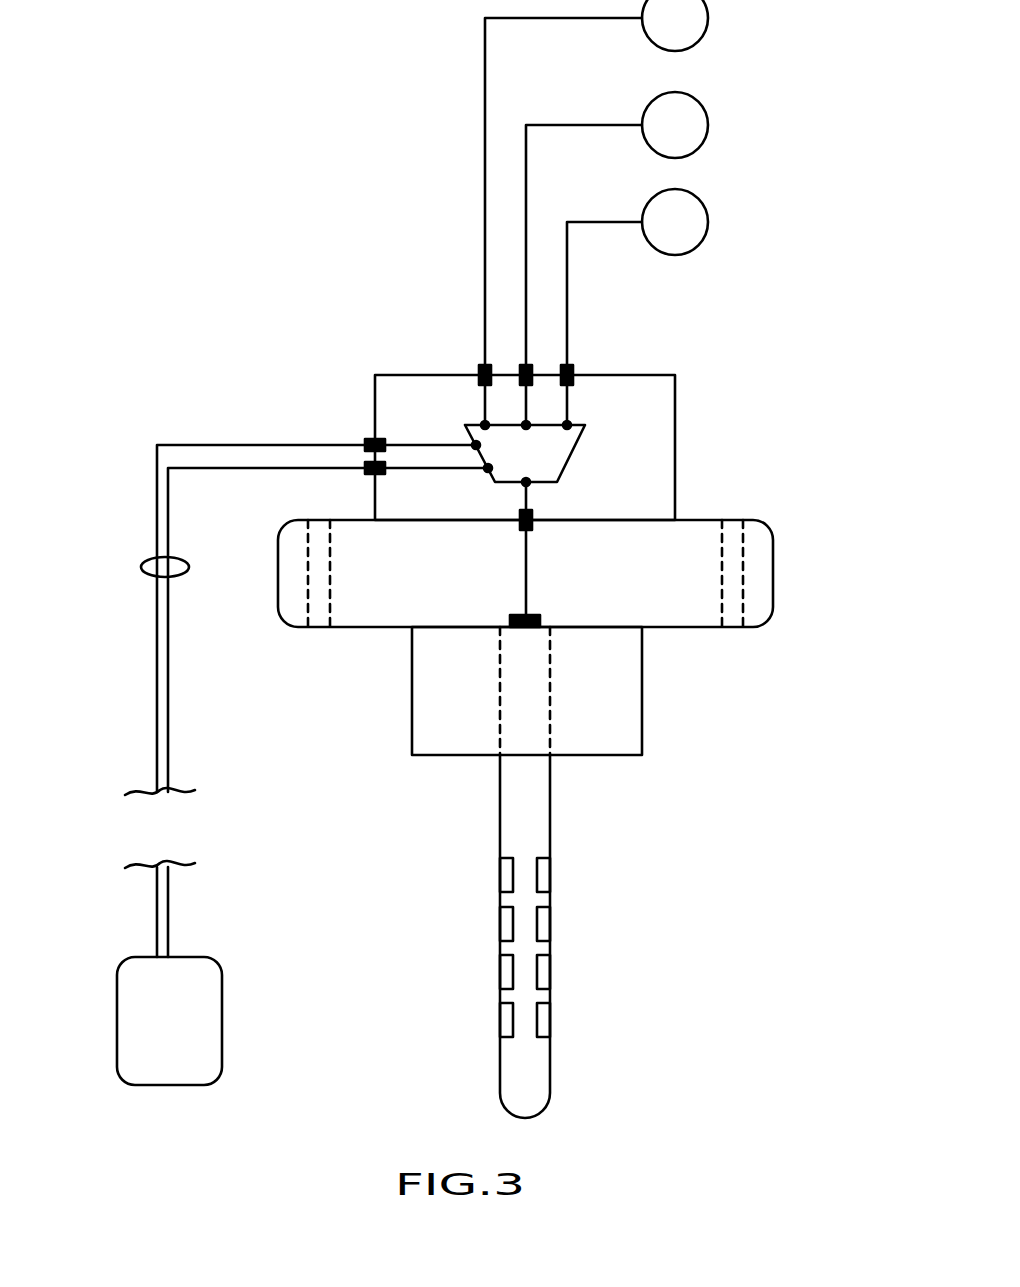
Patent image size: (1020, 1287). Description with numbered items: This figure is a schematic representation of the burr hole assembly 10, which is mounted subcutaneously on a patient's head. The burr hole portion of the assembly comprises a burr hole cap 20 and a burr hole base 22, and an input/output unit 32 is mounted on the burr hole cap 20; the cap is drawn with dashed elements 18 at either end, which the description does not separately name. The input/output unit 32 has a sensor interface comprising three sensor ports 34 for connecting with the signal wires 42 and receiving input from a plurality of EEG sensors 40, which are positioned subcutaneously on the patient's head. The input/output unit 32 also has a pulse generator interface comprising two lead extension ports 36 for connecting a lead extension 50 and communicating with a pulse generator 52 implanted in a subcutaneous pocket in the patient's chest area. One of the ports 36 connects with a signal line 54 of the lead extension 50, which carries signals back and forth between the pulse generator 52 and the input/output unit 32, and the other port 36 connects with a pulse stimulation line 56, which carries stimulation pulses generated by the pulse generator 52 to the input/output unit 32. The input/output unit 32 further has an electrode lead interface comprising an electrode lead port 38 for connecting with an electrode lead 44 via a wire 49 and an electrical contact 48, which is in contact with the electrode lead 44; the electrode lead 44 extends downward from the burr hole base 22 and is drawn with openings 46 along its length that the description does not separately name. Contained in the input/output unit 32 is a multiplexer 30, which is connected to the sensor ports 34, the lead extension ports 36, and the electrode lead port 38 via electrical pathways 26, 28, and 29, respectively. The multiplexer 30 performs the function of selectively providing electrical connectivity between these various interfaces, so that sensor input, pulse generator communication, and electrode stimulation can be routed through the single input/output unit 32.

The burr hole assembly 10 is at (308, 253).
The sealing members 18 is at (332, 570).
The burr hole cap 20 is at (708, 520).
The burr hole base 22 is at (642, 683).
The electrical pathways 26 is at (567, 400).
The electrical pathways 28 is at (410, 470).
The electrical pathway 29 is at (528, 494).
The multiplexer 30 is at (582, 448).
The input/output unit 32 is at (675, 395).
The sensor ports 34 is at (482, 368).
The lead extension ports 36 is at (372, 441).
The electrode lead port 38 is at (518, 525).
The EEG sensors 40 is at (708, 18).
The signal wires 42 is at (485, 95).
The electrode lead 44 is at (550, 803).
The probe openings 46 is at (550, 925).
The electrical contact 48 is at (540, 612).
The wire 49 is at (528, 565).
The lead extension 50 is at (142, 570).
The pulse generator 52 is at (222, 1004).
The signal line 54 is at (157, 675).
The pulse stimulation line 56 is at (170, 718).